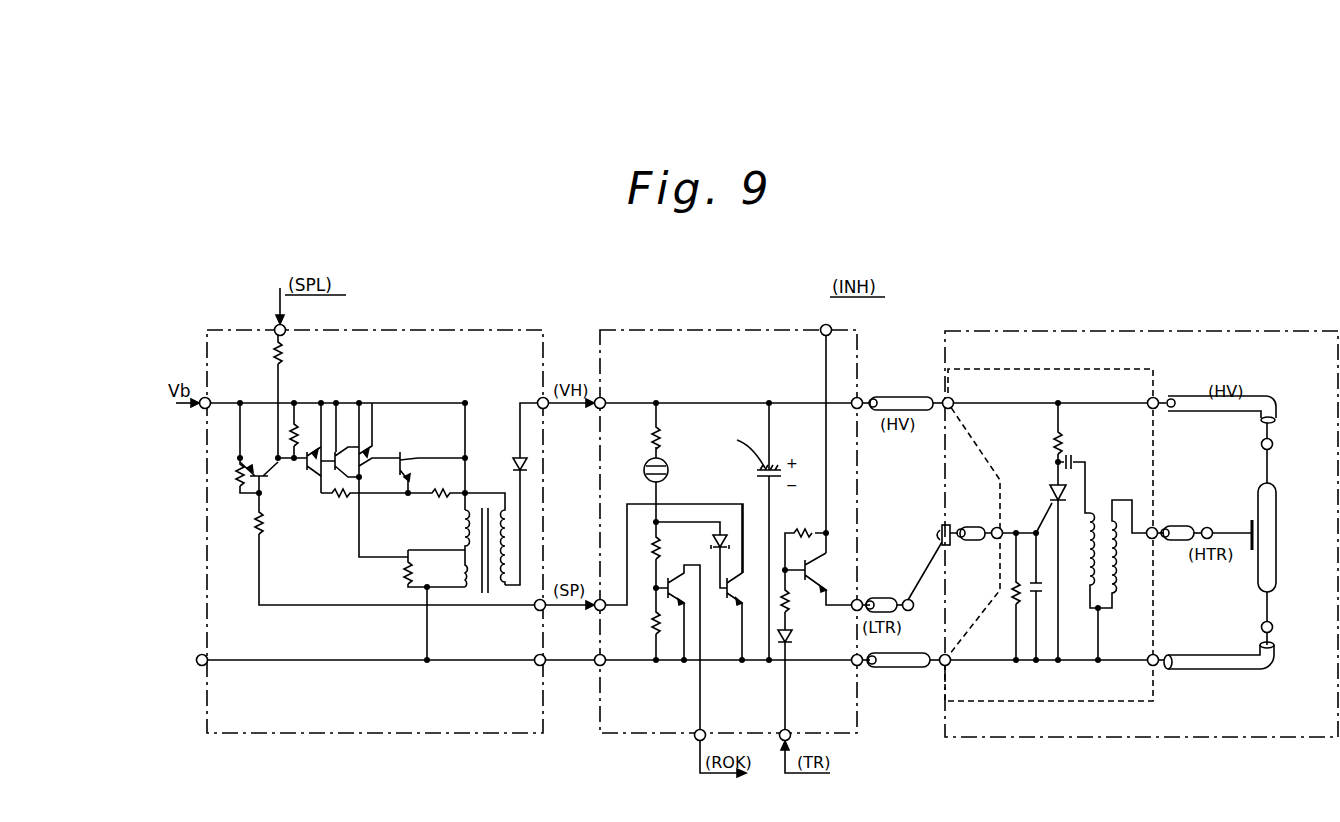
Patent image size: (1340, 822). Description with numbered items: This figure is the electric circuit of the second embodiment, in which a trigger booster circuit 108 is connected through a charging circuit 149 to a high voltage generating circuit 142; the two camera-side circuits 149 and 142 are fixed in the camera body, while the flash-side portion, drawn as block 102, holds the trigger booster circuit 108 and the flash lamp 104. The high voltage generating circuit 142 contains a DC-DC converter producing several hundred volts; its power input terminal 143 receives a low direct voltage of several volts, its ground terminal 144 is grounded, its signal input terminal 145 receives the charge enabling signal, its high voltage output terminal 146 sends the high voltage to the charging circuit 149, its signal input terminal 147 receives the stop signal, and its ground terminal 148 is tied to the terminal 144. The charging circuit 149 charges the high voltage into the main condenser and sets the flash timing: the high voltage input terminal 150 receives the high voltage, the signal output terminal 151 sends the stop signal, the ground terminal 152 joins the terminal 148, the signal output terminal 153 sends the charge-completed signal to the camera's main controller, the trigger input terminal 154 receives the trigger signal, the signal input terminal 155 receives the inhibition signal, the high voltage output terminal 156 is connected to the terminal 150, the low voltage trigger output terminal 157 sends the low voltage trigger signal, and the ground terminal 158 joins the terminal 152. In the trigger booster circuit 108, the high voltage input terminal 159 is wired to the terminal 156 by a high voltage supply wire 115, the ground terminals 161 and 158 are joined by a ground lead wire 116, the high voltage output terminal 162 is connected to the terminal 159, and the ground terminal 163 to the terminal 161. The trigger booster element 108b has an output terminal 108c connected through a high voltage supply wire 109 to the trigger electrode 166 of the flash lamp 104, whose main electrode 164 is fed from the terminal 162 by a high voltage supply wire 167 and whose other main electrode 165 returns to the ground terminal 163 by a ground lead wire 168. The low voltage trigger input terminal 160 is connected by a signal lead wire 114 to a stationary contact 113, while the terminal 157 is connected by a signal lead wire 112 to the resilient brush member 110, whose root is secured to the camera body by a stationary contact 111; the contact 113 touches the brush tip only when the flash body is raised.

The flash unit circuit block 102 is at (1026, 330).
The flash lamp 104 is at (1284, 540).
The trigger booster circuit 108 is at (1156, 390).
The trigger booster element 108b is at (1084, 620).
The output terminal of the booster element 108c is at (1153, 540).
The high voltage supply wire 109 is at (1177, 525).
The brush member 110 is at (934, 534).
The stationary contact 111 is at (936, 658).
The signal lead wire 112 is at (886, 597).
The stationary contact 113 is at (949, 523).
The signal lead wire 114 is at (975, 542).
The high voltage supply wire 115 is at (905, 396).
The GND lead wire 116 is at (892, 668).
The high voltage generating circuit 142 is at (470, 329).
The power input terminal 143 is at (203, 409).
The ground terminal 144 is at (201, 666).
The signal input terminal 145 is at (277, 326).
The high voltage output terminal 146 is at (540, 399).
The signal input terminal 147 is at (536, 609).
The ground terminal 148 is at (542, 666).
The charging circuit 149 is at (683, 329).
The high voltage input terminal 150 is at (598, 398).
The signal output terminal 151 is at (602, 610).
The ground terminal 152 is at (596, 657).
The signal output terminal 153 is at (694, 738).
The trigger input terminal 154 is at (783, 729).
The signal input terminal 155 is at (822, 326).
The high voltage output terminal 156 is at (859, 397).
The low voltage trigger output terminal 157 is at (857, 598).
The ground terminal 158 is at (855, 666).
The high voltage input terminal 159 is at (953, 401).
The low voltage trigger input terminal 160 is at (1001, 527).
The ground terminal 161 is at (942, 666).
The high voltage output terminal 162 is at (1155, 409).
The ground terminal 163 is at (1155, 666).
The main electrode 164 is at (1273, 444).
The main electrode 165 is at (1261, 627).
The trigger electrode 166 is at (1209, 527).
The high voltage supply wire 167 is at (1223, 413).
The GND lead wire 168 is at (1243, 671).